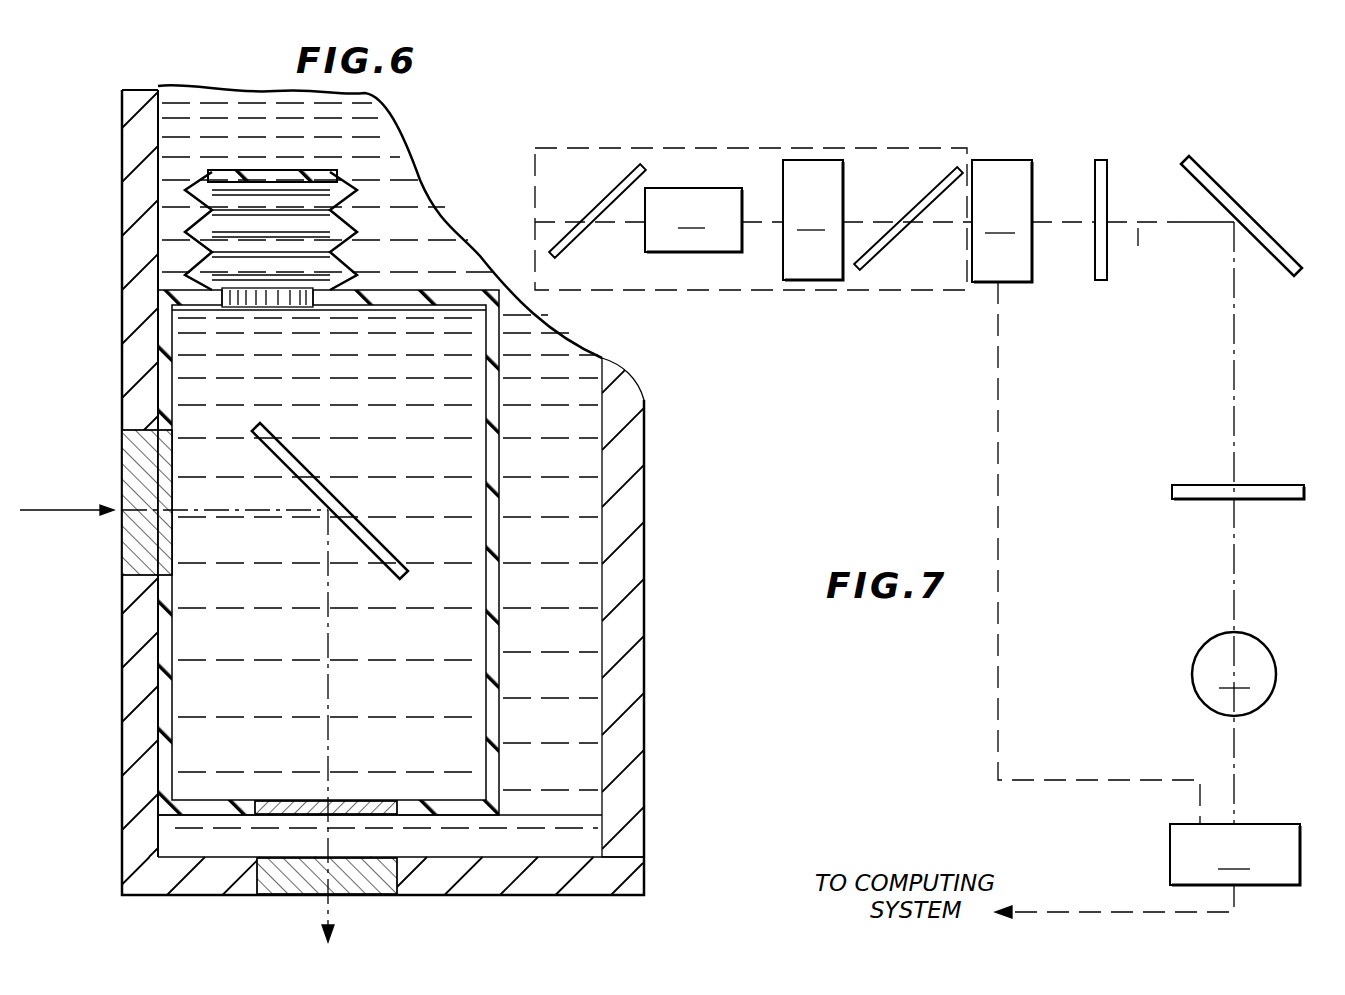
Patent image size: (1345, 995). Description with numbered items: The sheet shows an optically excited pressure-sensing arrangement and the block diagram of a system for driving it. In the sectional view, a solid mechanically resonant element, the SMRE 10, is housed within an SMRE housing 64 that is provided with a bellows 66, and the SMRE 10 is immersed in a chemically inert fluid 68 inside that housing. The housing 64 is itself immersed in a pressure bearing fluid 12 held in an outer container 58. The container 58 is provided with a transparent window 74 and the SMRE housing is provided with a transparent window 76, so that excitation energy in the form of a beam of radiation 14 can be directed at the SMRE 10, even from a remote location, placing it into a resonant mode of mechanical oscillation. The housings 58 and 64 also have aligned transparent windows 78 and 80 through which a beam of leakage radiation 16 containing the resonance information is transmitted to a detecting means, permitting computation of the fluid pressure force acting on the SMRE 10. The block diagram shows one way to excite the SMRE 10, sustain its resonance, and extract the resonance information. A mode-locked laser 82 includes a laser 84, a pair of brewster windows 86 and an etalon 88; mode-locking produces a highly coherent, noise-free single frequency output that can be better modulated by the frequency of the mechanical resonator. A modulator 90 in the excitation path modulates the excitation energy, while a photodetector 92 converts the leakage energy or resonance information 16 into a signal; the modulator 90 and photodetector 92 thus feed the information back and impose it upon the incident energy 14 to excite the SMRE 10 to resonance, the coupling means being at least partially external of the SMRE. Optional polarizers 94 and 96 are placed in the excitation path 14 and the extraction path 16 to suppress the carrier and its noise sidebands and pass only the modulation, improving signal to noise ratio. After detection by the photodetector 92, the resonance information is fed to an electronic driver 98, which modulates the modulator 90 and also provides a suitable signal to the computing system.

In FIG. 6, the solid mechanically resonant element (SMRE) 10 is at (378, 506).
In FIG. 7, the solid mechanically resonant element (SMRE) 10 is at (1275, 105).
In FIG. 6, the pressure bearing fluid 12 is at (590, 680).
In FIG. 6, the exciting means (beam of radiation) 14 is at (72, 512).
In FIG. 7, the exciting means (beam of radiation) 14 is at (1155, 247).
In FIG. 6, the detecting means (leakage radiation beam) 16 is at (322, 917).
In FIG. 7, the detecting means (leakage radiation beam) 16 is at (1236, 412).
In FIG. 6, the container 58 is at (635, 792).
In FIG. 6, the SMRE housing 64 is at (500, 458).
In FIG. 6, the bellows 66 is at (208, 160).
In FIG. 6, the chemically inert fluid 68 is at (205, 686).
In FIG. 6, the transparent window 74 is at (150, 465).
In FIG. 6, the transparent window 76 is at (165, 548).
In FIG. 6, the transparent window 78 is at (372, 892).
In FIG. 6, the transparent window 80 is at (284, 805).
In FIG. 7, the mode-locked laser 82 is at (773, 300).
In FIG. 7, the laser 84 is at (690, 253).
In FIG. 7, the brewster window 86 is at (965, 126).
In FIG. 7, the etalon 88 is at (990, 272).
In FIG. 7, the modulator 90 is at (815, 124).
In FIG. 7, the photodetector 92 is at (1198, 686).
In FIG. 7, the polarizer 94 is at (1097, 281).
In FIG. 7, the polarizer 96 is at (1266, 518).
In FIG. 7, the electronic driver 98 is at (1170, 857).